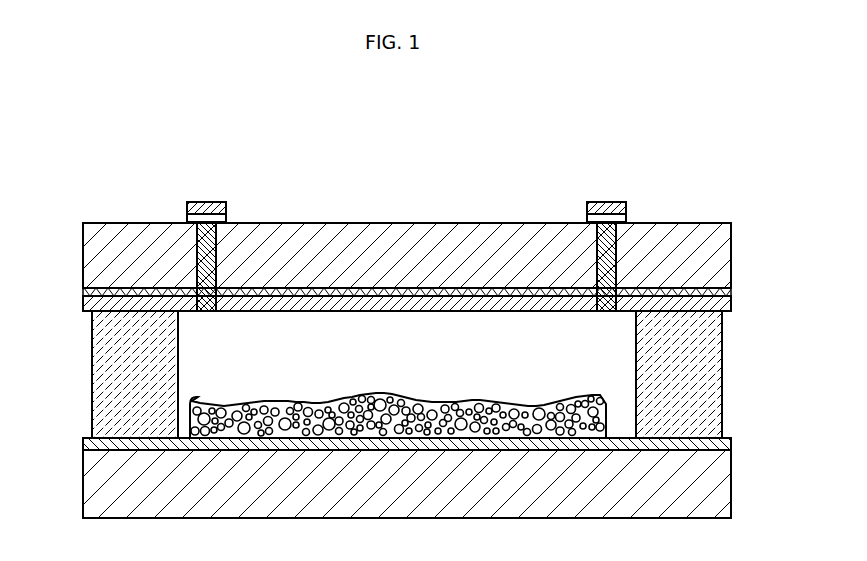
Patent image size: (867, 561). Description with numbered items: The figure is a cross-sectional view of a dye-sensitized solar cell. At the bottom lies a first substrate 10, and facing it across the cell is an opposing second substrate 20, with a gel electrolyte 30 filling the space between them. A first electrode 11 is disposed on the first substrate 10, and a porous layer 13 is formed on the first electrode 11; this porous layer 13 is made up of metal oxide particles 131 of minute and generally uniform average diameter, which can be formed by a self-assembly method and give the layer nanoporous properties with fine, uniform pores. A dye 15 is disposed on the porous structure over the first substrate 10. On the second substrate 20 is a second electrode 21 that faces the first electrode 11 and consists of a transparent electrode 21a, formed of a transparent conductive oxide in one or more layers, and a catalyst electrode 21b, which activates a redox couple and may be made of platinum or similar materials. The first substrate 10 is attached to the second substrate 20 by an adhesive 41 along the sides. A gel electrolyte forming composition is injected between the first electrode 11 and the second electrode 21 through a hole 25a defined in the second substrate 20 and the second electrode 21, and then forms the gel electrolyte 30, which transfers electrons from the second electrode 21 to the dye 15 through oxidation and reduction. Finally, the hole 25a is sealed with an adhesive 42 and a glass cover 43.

The first substrate 10 is at (728, 481).
The first electrode 11 is at (731, 446).
The porous layer 13 is at (604, 422).
The dye 15 is at (192, 405).
The metal oxide particles 131 is at (190, 424).
The second substrate 20 is at (727, 241).
The second electrode 21 is at (460, 297).
The transparent electrode 21a is at (730, 292).
The catalyst electrode 21b is at (728, 308).
The hole 25a is at (197, 278).
The gel electrolyte 30 is at (405, 323).
The adhesive 41 is at (722, 361).
The adhesive 42 is at (207, 253).
The glass cover 43 is at (207, 203).